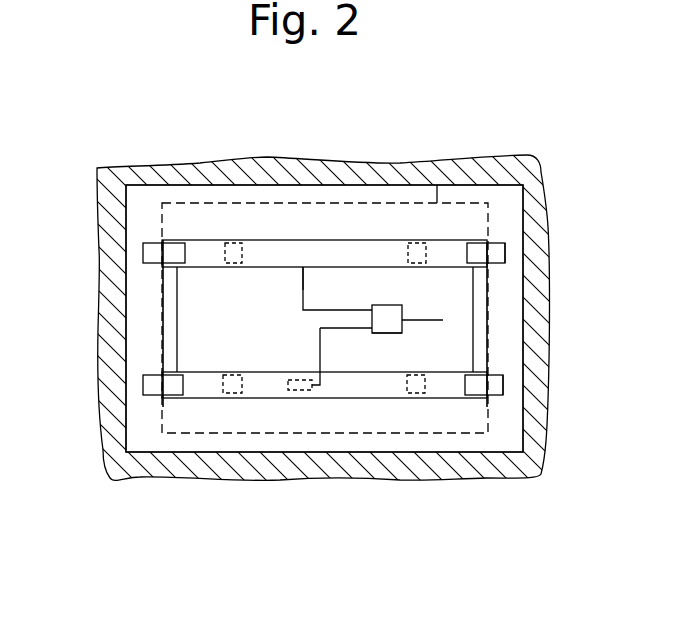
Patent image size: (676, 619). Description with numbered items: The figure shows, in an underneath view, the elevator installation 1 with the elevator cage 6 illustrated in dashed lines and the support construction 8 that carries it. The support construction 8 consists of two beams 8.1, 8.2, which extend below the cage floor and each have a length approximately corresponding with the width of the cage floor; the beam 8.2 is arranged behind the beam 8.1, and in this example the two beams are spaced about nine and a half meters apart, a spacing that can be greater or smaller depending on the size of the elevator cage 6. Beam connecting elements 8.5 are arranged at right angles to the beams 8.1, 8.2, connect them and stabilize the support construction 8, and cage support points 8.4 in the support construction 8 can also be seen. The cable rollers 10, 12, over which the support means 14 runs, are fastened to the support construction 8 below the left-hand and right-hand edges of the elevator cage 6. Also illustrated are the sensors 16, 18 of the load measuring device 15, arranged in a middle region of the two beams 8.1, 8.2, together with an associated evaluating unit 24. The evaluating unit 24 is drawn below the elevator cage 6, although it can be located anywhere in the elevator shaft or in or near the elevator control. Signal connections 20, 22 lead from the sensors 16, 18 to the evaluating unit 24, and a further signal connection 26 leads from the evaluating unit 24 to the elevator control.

The elevator installation 1 is at (576, 174).
The elevator cage 6 is at (487, 477).
The support construction 8 is at (176, 408).
The beam 8.1 is at (236, 396).
The beam 8.2 is at (272, 240).
The cage support points 8.4 is at (230, 243).
The beam connecting elements 8.5 is at (168, 307).
The cable roller 10 is at (178, 240).
The cable roller 12 is at (500, 245).
The support means 14 is at (505, 253).
The load measuring device 15 is at (290, 332).
The sensor 16 is at (305, 392).
The sensor 18 is at (309, 240).
The signal connection 20 is at (322, 352).
The signal connection 22 is at (304, 283).
The evaluating unit 24 is at (387, 334).
The signal connection 26 is at (432, 317).